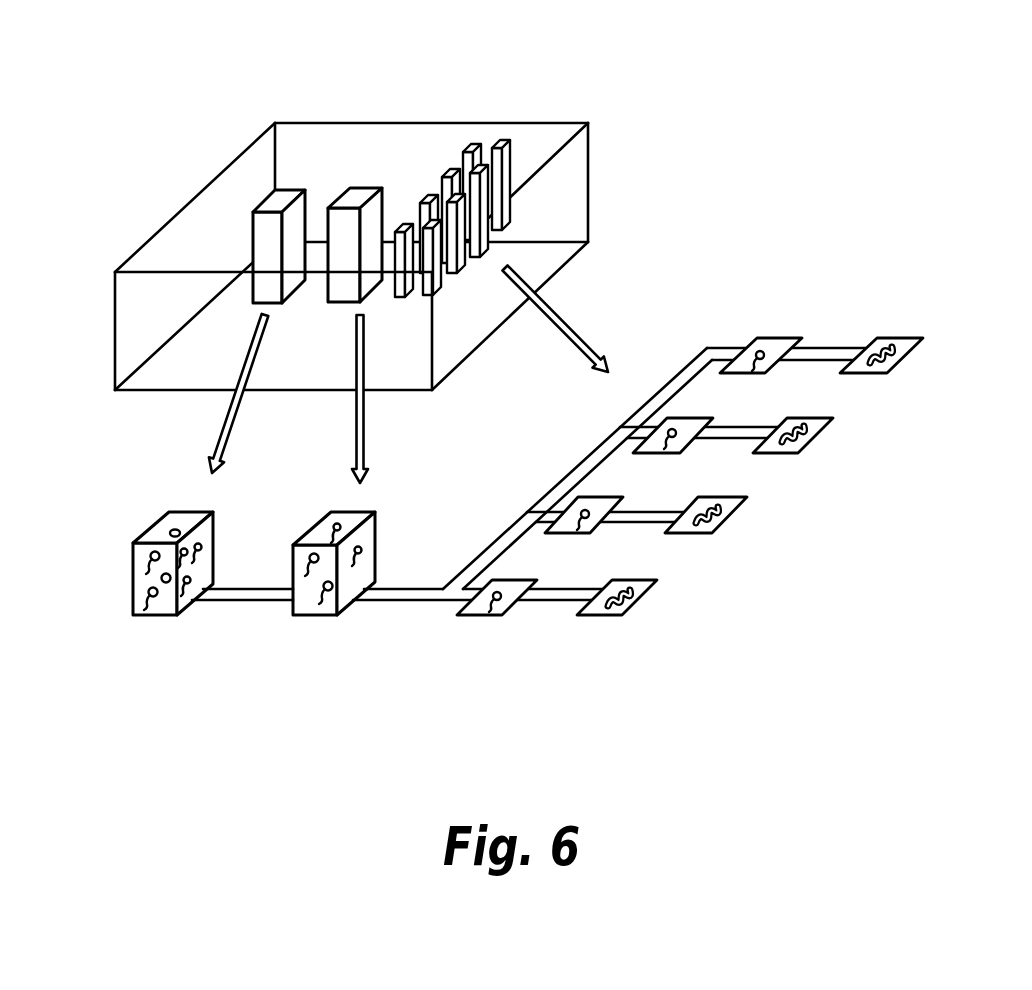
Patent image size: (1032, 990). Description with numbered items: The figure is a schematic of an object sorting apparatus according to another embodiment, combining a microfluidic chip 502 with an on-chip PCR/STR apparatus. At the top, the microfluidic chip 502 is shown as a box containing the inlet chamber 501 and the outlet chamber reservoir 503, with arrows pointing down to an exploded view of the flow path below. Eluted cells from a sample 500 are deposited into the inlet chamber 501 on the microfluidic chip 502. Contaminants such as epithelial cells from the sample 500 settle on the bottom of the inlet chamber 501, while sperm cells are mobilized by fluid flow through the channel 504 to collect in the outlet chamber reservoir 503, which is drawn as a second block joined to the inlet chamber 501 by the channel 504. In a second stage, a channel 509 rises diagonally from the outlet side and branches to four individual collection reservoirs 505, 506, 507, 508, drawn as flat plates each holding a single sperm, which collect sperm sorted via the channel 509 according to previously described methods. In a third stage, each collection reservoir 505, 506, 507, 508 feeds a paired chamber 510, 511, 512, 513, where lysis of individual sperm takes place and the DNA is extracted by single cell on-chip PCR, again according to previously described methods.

The sample 500 is at (142, 582).
The inlet chamber 501 is at (290, 192).
The microfluidic chip 502 is at (177, 210).
The outlet chamber reservoir 503 is at (355, 188).
The channel 504 is at (253, 602).
The individual collection reservoir 505 is at (490, 617).
The individual collection reservoir 506 is at (563, 535).
The individual collection reservoir 507 is at (653, 455).
The individual collection reservoir 508 is at (760, 337).
The channel 509 is at (603, 446).
The lysis chamber 510 is at (889, 337).
The lysis chamber 511 is at (815, 434).
The lysis chamber 512 is at (722, 514).
The lysis chamber 513 is at (640, 605).